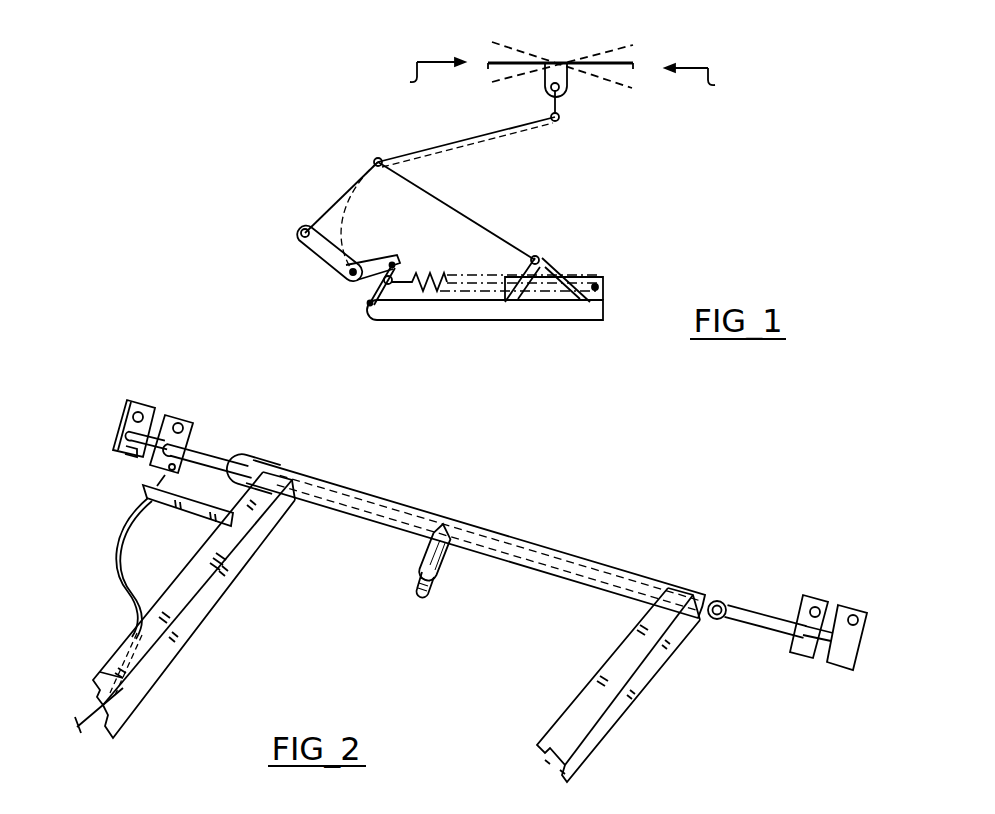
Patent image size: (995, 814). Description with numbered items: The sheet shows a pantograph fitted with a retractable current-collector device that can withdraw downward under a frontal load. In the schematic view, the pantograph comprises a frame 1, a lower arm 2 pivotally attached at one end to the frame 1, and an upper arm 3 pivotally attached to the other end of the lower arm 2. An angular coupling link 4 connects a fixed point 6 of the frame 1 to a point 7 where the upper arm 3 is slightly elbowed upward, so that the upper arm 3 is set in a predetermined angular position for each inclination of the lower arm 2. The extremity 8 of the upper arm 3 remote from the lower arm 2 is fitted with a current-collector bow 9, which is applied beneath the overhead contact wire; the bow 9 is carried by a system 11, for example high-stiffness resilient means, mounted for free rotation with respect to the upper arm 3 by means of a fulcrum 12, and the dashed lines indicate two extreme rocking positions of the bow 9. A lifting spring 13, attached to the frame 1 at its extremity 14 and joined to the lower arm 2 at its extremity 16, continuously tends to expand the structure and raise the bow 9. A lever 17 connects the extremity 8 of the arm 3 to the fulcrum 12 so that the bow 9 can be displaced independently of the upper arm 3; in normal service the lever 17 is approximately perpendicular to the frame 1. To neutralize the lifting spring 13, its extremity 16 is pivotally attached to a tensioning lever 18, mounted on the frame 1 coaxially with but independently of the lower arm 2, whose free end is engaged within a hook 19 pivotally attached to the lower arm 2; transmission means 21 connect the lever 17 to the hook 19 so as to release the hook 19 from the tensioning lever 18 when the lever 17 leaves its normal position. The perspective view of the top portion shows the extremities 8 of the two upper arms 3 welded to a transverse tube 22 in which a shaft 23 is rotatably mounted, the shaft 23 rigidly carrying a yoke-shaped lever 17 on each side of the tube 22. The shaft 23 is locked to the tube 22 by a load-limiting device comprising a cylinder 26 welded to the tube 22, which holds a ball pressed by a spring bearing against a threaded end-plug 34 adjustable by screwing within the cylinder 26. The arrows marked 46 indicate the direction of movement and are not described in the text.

In FIG. 1, the frame 1 is at (488, 312).
In FIG. 1, the lower arm 2 is at (320, 261).
In FIG. 1, the upper arm 3 is at (344, 196).
In FIG. 2, the upper arm 3 is at (198, 610).
In FIG. 1, the angular coupling link 4 is at (484, 228).
In FIG. 1, the fixed point 6 is at (542, 256).
In FIG. 1, the point 7 is at (378, 157).
In FIG. 1, the extremity 8 is at (557, 122).
In FIG. 2, the extremity 8 is at (290, 500).
In FIG. 1, the current-collector bow 9 is at (598, 62).
In FIG. 1, the system 11 is at (568, 76).
In FIG. 1, the fulcrum 12 is at (547, 87).
In FIG. 2, the fulcrum 12 is at (140, 409).
In FIG. 1, the lifting spring 13 is at (430, 285).
In FIG. 1, the extremity 14 is at (600, 288).
In FIG. 1, the extremity 16 is at (392, 284).
In FIG. 1, the lever 17 is at (560, 107).
In FIG. 2, the lever 17 is at (112, 418).
In FIG. 1, the tensioning lever 18 is at (362, 296).
In FIG. 1, the hook 19 is at (383, 263).
In FIG. 1, the transmission means 21 is at (490, 143).
In FIG. 2, the transverse tube 22 is at (556, 548).
In FIG. 2, the shaft 23 is at (218, 458).
In FIG. 2, the cylinder 26 is at (447, 531).
In FIG. 2, the threaded end-plug 34 is at (417, 598).
In FIG. 1, the direction of movement arrow 46 is at (560, 80).